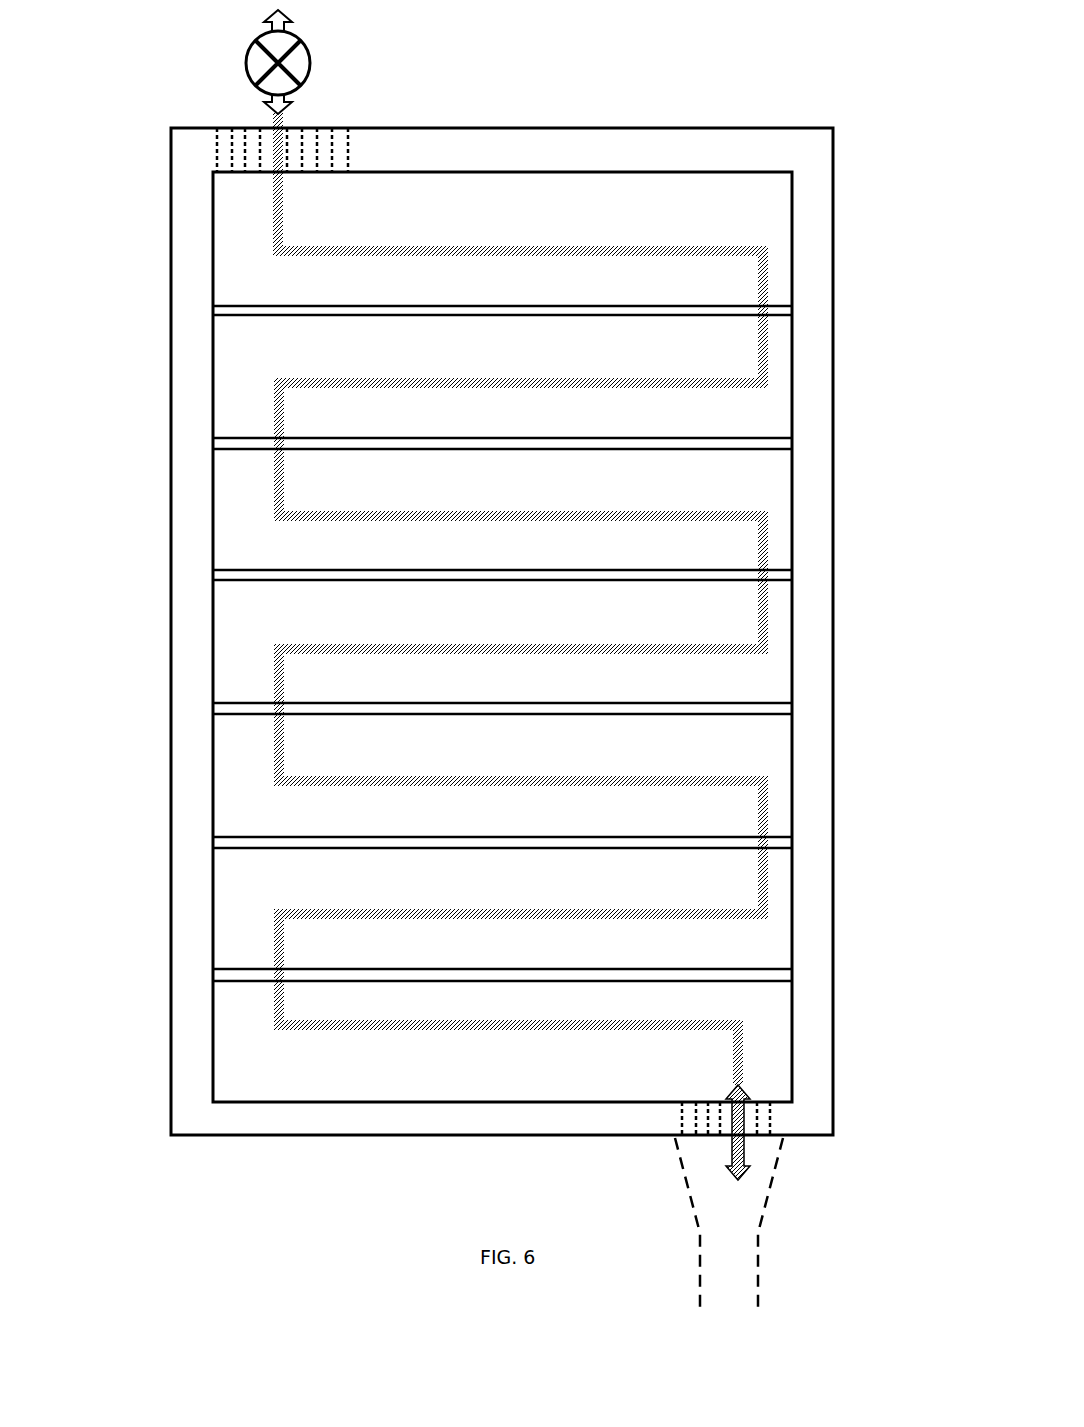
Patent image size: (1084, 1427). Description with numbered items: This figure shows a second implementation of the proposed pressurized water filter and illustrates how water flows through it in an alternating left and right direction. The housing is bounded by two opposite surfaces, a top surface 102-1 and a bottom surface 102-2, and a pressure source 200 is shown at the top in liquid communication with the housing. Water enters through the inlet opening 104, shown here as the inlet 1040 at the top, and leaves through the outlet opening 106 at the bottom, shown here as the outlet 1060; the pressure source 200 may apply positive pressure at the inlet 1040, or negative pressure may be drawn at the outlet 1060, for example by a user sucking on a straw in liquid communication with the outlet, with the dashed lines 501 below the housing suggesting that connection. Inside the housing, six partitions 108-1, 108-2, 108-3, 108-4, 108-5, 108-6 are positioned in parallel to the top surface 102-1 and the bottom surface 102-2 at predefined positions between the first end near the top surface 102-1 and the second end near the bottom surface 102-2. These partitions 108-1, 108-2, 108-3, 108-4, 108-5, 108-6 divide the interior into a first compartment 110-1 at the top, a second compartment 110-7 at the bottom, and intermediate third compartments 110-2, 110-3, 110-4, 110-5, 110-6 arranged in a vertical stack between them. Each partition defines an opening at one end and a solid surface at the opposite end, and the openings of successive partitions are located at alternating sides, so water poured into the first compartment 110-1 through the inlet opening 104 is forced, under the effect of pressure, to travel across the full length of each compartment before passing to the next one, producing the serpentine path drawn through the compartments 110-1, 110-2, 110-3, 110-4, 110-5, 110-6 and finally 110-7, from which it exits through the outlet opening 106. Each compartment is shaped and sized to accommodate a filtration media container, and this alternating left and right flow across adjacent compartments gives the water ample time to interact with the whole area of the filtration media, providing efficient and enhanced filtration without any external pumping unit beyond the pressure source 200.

The top surface 102-1 is at (598, 148).
The bottom surface 102-2 is at (447, 1118).
The inlet opening 104 is at (215, 157).
The outlet opening 106 is at (775, 1133).
The pressure source 200 is at (258, 62).
The inlet 1040 is at (282, 125).
The outlet 1060 is at (735, 1140).
The airflow outlet region 501 is at (725, 1283).
The partition 108-1 is at (775, 310).
The partition 108-2 is at (775, 443).
The partition 108-3 is at (775, 578).
The partition 108-4 is at (775, 710).
The partition 108-5 is at (775, 845).
The partition 108-6 is at (780, 984).
The first compartment 110-1 is at (238, 242).
The third compartment 110-2 is at (237, 380).
The third compartment 110-3 is at (232, 513).
The third compartment 110-4 is at (235, 645).
The third compartment 110-5 is at (232, 778).
The third compartment 110-6 is at (230, 916).
The second compartment 110-7 is at (228, 1062).